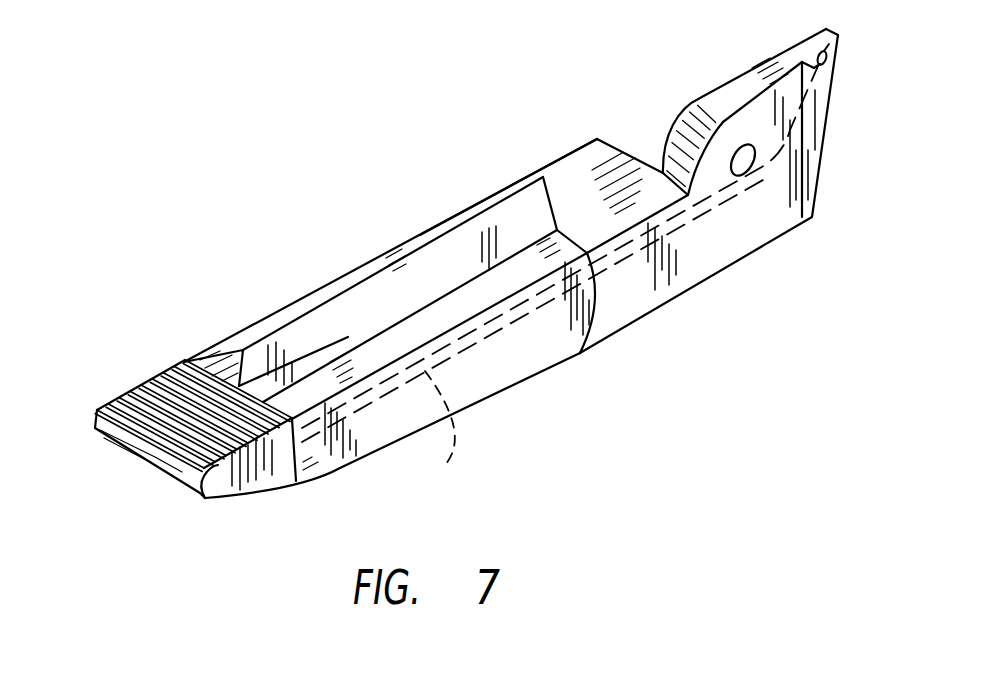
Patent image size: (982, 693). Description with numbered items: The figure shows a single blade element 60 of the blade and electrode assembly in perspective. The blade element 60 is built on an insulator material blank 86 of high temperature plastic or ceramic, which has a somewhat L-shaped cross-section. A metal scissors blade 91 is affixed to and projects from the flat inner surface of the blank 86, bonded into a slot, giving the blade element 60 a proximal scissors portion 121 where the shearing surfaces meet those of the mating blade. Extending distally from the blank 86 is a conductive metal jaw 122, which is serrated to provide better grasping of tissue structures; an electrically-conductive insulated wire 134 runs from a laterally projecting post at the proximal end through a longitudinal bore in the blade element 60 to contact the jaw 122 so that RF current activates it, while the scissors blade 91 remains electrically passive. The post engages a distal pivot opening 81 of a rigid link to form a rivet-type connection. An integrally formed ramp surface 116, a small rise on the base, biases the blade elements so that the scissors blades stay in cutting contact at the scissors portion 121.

The first blade element 60 is at (480, 394).
The metal scissors blade 91 is at (351, 290).
The proximal scissors portion 121 is at (555, 163).
The conductive metal jaw 122 is at (148, 389).
The ramp surface 116 is at (588, 156).
The insulator material blank 86 is at (743, 249).
The distal pivot opening 81 is at (830, 63).
The electrically-conductive insulated wire 134 is at (445, 465).